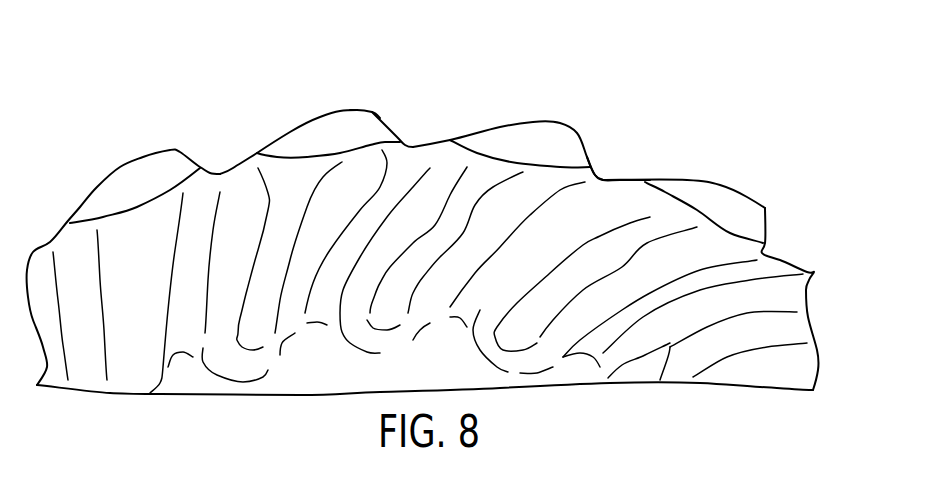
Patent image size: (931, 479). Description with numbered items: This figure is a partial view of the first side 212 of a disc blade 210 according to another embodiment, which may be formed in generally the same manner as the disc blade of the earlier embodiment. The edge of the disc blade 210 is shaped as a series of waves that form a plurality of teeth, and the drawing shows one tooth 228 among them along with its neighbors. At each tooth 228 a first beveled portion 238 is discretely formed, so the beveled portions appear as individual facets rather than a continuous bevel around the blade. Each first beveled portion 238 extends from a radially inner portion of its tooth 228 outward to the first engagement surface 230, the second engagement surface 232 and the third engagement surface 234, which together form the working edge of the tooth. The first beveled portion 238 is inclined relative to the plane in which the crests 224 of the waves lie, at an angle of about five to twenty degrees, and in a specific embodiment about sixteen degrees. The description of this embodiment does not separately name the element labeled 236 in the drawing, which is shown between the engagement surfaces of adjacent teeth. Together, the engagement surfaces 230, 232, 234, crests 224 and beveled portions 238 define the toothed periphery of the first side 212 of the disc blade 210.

The disc blade 210 is at (143, 133).
The first side 212 is at (790, 332).
The crests 224 is at (483, 190).
The tooth 228 is at (647, 217).
The first engagement surface 230 is at (382, 117).
The second engagement surface 232 is at (277, 140).
The third engagement surface 234 is at (367, 107).
The valley 236 is at (602, 178).
The first beveled portion 238 is at (327, 128).